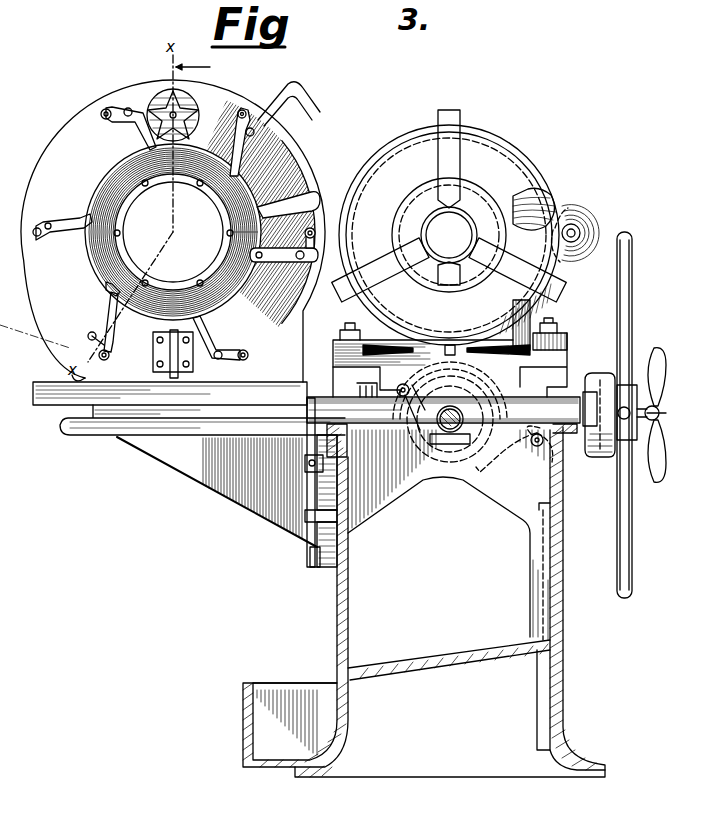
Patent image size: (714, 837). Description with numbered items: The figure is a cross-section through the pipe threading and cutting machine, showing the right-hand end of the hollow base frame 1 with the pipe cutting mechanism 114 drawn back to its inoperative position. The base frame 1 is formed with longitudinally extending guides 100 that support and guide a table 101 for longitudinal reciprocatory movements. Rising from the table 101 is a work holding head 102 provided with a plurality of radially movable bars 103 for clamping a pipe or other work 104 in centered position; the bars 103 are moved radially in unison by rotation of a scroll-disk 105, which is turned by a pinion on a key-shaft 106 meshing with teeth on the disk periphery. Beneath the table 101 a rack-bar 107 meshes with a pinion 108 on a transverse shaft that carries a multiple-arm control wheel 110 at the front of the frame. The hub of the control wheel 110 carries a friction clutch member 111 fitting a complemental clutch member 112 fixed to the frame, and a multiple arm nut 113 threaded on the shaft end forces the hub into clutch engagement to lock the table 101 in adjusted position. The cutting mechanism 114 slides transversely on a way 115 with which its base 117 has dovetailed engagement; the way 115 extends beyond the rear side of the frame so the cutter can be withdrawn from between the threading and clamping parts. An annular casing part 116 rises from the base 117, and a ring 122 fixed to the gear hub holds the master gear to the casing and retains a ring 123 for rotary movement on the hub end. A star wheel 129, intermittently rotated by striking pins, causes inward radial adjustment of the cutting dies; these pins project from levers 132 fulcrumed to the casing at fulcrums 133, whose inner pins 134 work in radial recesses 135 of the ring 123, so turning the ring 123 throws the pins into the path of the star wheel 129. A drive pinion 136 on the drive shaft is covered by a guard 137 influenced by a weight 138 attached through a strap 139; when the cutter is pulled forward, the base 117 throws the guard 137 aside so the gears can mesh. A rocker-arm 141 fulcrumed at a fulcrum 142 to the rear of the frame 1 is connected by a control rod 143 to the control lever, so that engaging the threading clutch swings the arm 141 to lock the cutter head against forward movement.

The hollow base frame 1 is at (424, 600).
The longitudinally extending guides 100 is at (578, 352).
The table 101 is at (518, 360).
The work holding head 102 is at (449, 235).
The radially movable bars 103 is at (460, 164).
The pipe or other work 104 is at (478, 238).
The scroll-disk 105 is at (540, 196).
The key-shaft 106 is at (578, 228).
The rack-bar 107 is at (465, 372).
The pinion 108 is at (445, 440).
The multiple-arm control wheel 110 is at (626, 366).
The friction clutch member 111 is at (616, 452).
The complemental clutch member 112 is at (594, 440).
The multiple arm nut 113 is at (660, 410).
The pipe cutting mechanism 114 is at (70, 121).
The way 115 is at (392, 410).
The annular casing part 116 is at (163, 232).
The base 117 is at (189, 464).
The ring 122 is at (112, 262).
The ring 123 is at (104, 186).
The star wheel 129 is at (195, 115).
The levers 132 is at (212, 344).
The lever fulcrum 133 is at (108, 340).
The laterally projecting pins 134 is at (90, 218).
The radial recesses 135 is at (108, 290).
The drive pinion 136 is at (428, 452).
The guard 137 is at (410, 400).
The weight 138 is at (548, 576).
The strap 139 is at (514, 440).
The rocker-arm 141 is at (308, 486).
The rocker-arm fulcrum 142 is at (303, 532).
The control rod 143 is at (304, 466).